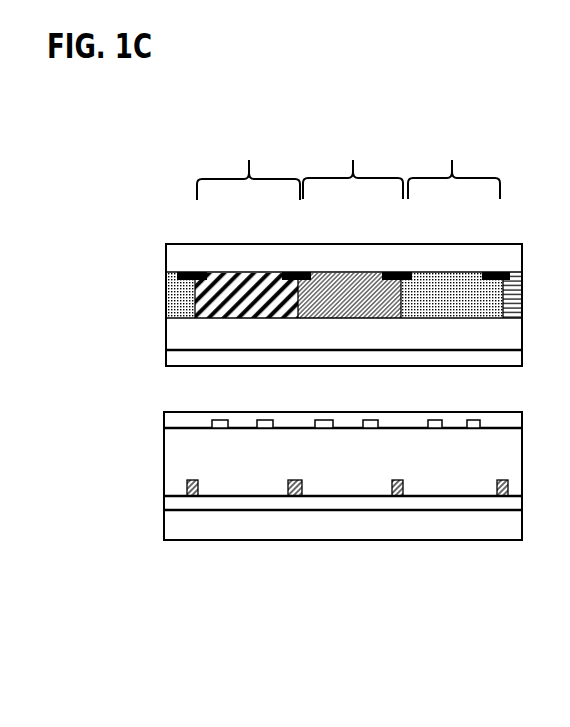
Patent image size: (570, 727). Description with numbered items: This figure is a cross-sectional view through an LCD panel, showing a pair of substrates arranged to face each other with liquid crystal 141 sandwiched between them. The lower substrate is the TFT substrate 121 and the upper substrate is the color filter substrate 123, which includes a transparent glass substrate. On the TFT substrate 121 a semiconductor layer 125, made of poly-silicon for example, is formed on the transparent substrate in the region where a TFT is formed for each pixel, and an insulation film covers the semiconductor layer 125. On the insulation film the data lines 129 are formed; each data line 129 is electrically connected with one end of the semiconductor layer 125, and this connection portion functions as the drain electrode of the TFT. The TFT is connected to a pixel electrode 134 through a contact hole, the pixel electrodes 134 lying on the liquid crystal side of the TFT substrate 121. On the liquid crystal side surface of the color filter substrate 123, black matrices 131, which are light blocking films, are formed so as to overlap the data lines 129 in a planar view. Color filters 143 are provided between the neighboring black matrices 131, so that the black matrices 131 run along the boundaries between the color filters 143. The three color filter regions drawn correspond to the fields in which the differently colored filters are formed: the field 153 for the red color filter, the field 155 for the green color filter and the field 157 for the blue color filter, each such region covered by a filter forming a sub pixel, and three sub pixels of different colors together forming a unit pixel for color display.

The TFT substrate 121 is at (157, 412).
The color filter substrate 123 is at (157, 244).
The semiconductor layer 125 is at (320, 505).
The data lines 129 is at (198, 499).
The black matrices 131 is at (287, 272).
The pixel electrode 134 is at (324, 420).
The liquid crystal 141 is at (229, 398).
The color filters 143 is at (238, 293).
The red color filter field 153 is at (248, 167).
The green color filter field 155 is at (353, 167).
The blue color filter field 157 is at (454, 167).